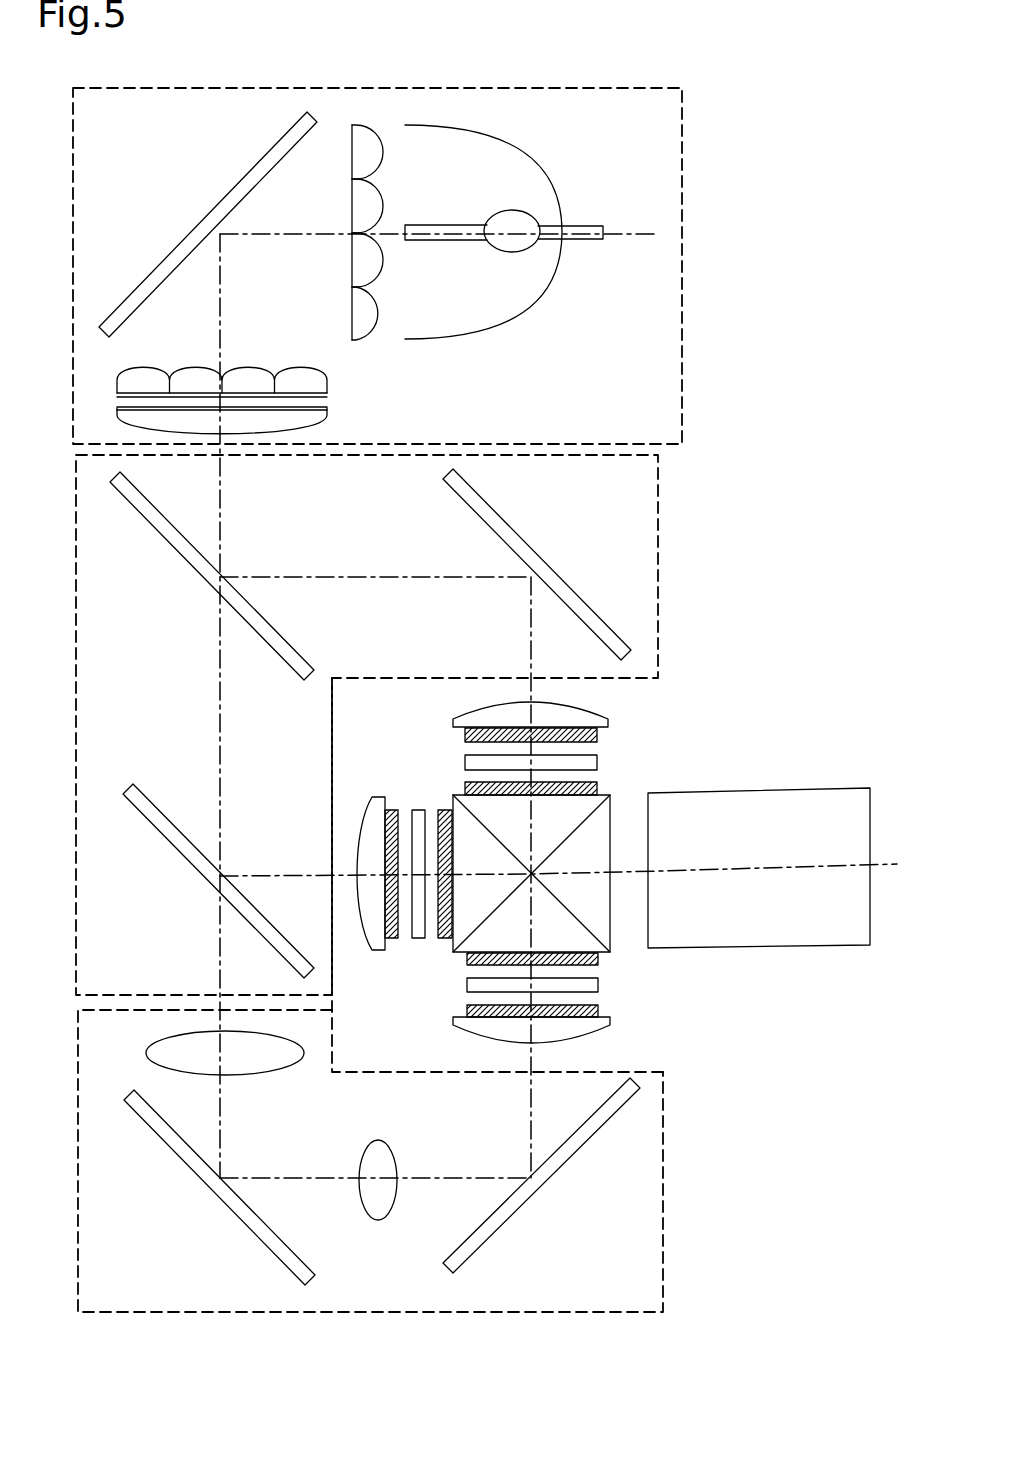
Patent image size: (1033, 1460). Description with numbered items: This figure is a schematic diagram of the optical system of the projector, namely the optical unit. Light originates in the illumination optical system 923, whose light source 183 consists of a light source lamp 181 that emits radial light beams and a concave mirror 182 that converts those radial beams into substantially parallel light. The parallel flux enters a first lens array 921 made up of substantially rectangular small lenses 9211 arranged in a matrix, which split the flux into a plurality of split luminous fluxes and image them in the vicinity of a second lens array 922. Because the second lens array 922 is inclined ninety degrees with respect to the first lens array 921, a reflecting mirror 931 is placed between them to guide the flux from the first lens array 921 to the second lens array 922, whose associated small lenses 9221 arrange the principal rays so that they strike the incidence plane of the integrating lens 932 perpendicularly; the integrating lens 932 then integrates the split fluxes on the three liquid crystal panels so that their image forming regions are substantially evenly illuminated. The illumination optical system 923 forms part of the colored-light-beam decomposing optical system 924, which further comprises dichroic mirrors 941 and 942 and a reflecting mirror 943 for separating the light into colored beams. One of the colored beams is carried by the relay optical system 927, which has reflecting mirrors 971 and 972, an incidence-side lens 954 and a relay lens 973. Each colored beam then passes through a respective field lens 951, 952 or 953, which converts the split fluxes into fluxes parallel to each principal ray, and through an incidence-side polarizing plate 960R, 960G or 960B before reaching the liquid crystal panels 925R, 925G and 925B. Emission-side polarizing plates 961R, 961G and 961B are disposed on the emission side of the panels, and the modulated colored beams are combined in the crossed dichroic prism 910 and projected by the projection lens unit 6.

The projection lens unit 6 is at (797, 790).
The light source lamp 181 is at (455, 242).
The concave mirror 182 is at (543, 172).
The light source 183 is at (519, 242).
The crossed dichroic prism 910 is at (611, 808).
The first lens array 921 is at (372, 335).
The small lens 9211 is at (380, 158).
The second lens array 922 is at (327, 382).
The small lens 9221 is at (251, 365).
The illumination optical system 923 is at (682, 175).
The colored-light-beam decomposing optical system 924 is at (658, 538).
The liquid crystal panel 925R is at (597, 760).
The liquid crystal panel 925G is at (418, 942).
The liquid crystal panel 925B is at (598, 985).
The relay optical system 927 is at (663, 1190).
The reflecting mirror 931 is at (233, 194).
The integrating lens 932 is at (327, 418).
The dichroic mirror 941 is at (152, 535).
The dichroic mirror 942 is at (155, 838).
The reflecting mirror 943 is at (513, 530).
The field lens 951 is at (607, 717).
The field lens 952 is at (357, 920).
The field lens 953 is at (610, 1022).
The incidence-side lens 954 is at (280, 1075).
The incidence-side polarizing plate 960R is at (465, 733).
The incidence-side polarizing plate 960G is at (395, 808).
The incidence-side polarizing plate 960B is at (468, 1012).
The emission-side polarizing plate 961R is at (465, 787).
The emission-side polarizing plate 961G is at (445, 942).
The emission-side polarizing plate 961B is at (598, 958).
The reflecting mirror 971 is at (183, 1165).
The reflecting mirror 972 is at (566, 1165).
The relay lens 973 is at (375, 1220).